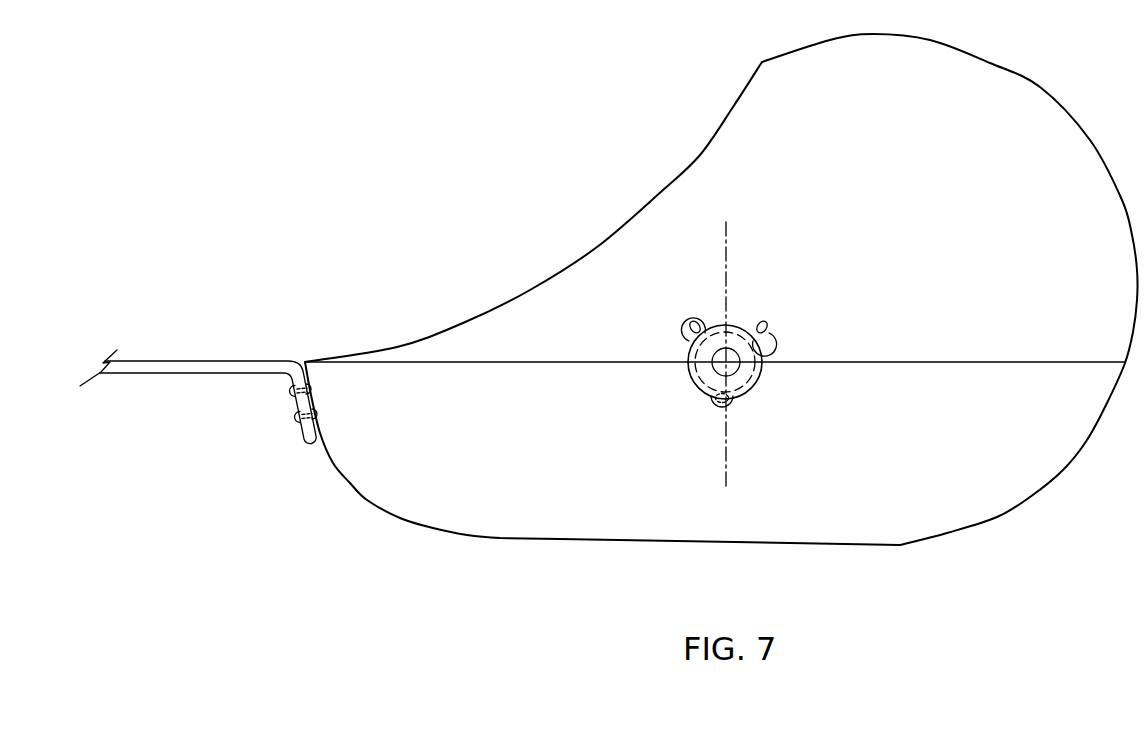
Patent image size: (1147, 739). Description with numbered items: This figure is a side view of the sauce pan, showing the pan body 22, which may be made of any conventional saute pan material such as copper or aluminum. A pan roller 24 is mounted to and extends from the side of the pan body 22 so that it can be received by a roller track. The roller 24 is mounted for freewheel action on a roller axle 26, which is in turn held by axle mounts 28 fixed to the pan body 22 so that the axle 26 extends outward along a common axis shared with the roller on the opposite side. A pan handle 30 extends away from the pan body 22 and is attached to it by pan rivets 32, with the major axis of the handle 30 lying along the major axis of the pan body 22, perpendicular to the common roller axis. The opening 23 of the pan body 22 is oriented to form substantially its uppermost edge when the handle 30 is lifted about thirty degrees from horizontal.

The pan body 22 is at (887, 451).
The opening 23 is at (617, 232).
The pan roller 24 is at (765, 372).
The roller axle 26 is at (737, 370).
The axle mounts 28 is at (773, 323).
The pan handle 30 is at (195, 360).
The pan rivets 32 is at (317, 387).